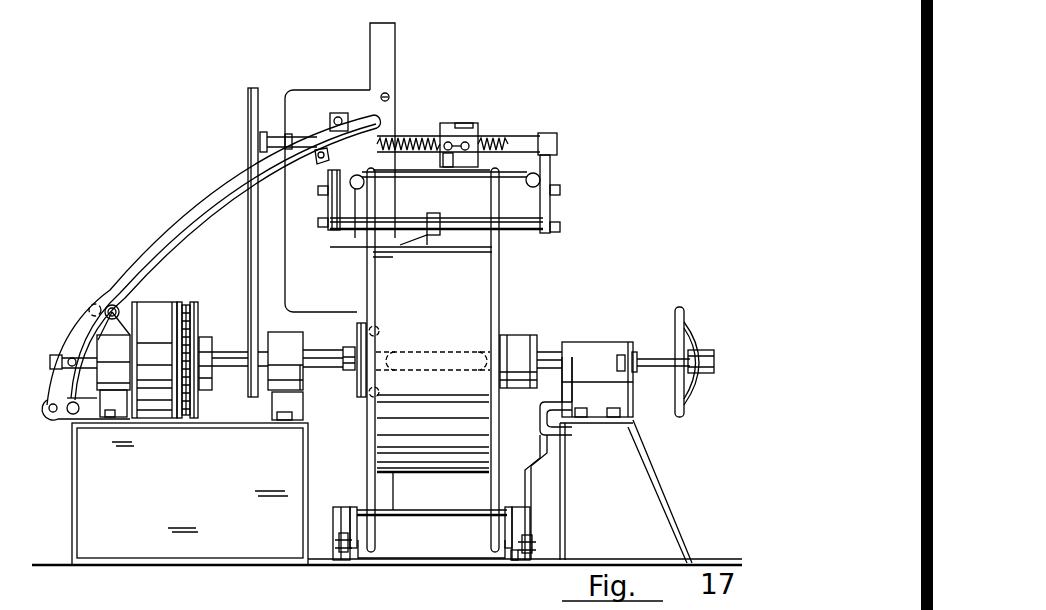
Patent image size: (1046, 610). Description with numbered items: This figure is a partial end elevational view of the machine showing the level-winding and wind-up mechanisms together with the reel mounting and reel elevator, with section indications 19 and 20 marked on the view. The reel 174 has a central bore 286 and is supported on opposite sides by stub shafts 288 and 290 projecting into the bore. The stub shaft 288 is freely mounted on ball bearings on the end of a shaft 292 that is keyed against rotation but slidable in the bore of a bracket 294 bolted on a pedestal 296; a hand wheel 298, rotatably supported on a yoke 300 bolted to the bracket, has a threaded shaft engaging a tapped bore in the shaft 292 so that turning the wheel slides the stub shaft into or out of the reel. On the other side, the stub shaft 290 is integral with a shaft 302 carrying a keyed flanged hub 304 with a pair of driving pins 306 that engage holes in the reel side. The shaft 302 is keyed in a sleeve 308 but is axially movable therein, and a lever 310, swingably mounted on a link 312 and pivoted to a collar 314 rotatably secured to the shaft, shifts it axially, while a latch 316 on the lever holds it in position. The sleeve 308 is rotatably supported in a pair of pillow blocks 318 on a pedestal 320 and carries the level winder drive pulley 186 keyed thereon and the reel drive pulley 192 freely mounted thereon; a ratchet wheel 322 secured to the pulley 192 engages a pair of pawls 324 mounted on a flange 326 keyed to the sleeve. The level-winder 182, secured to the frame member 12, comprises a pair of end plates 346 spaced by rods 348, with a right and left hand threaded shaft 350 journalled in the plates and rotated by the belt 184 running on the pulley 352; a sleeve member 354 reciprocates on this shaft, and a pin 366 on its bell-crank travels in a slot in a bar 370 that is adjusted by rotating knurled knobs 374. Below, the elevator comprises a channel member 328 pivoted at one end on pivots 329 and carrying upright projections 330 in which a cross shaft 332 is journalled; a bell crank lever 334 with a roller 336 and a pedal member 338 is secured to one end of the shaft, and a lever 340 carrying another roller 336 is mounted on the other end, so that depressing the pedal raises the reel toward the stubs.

The frame member 12 is at (384, 42).
The reel 174 is at (482, 288).
The level-winder 182 is at (500, 129).
The belt 184 is at (252, 258).
The level winder drive pulley 186 is at (237, 298).
The reel drive pulley 192 is at (140, 302).
The central bore 286 is at (418, 358).
The stub shaft 288 is at (500, 352).
The stub shaft 290 is at (392, 350).
The shaft 292 is at (553, 366).
The bracket 294 is at (608, 347).
The pedestal 296 is at (647, 512).
The hand wheel 298 is at (683, 315).
The yoke 300 is at (660, 367).
The shaft 302 is at (328, 350).
The flanged hub 304 is at (351, 370).
The driving projections or pins 306 is at (376, 324).
The sleeve 308 is at (228, 352).
The lever 310 is at (165, 248).
The link 312 is at (83, 403).
The collar 314 is at (60, 355).
The latch 316 is at (104, 303).
The pillow blocks 318 is at (293, 340).
The pedestal 320 is at (100, 515).
The ratchet wheel 322 is at (186, 362).
The pawls 324 is at (186, 302).
The flange 326 is at (203, 360).
The channel member 328 is at (452, 563).
The pivots 329 is at (513, 560).
The upright projections 330 is at (515, 523).
The cross shaft 332 is at (428, 511).
The bell crank lever 334 is at (533, 482).
The roller 336 is at (337, 543).
The pedal member 338 is at (562, 435).
The lever 340 is at (338, 520).
The end plates 346 is at (552, 165).
The rods 348 is at (520, 223).
The right and left hand threaded shaft 350 is at (556, 145).
The pulley 352 is at (247, 100).
The sleeve member 354 is at (453, 123).
The pin 366 is at (477, 178).
The bar 370 is at (418, 178).
The knurled knobs 374 is at (541, 181).
The section line 19 is at (468, 360).
The section line 20 is at (458, 112).